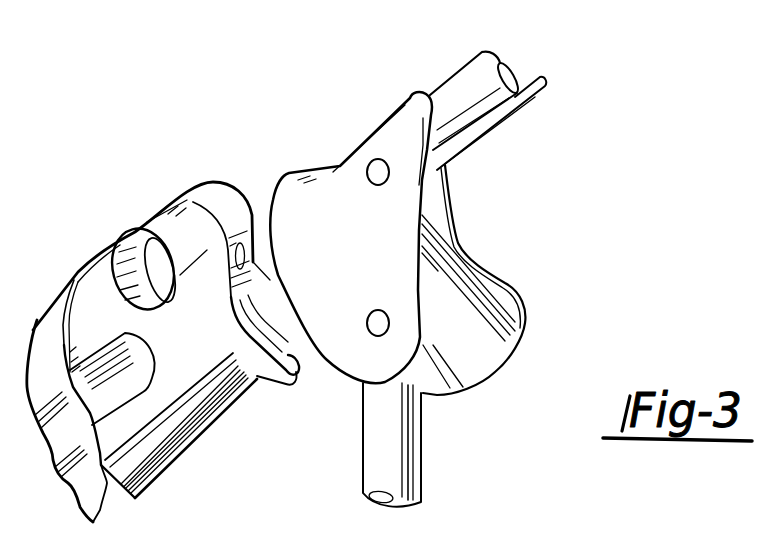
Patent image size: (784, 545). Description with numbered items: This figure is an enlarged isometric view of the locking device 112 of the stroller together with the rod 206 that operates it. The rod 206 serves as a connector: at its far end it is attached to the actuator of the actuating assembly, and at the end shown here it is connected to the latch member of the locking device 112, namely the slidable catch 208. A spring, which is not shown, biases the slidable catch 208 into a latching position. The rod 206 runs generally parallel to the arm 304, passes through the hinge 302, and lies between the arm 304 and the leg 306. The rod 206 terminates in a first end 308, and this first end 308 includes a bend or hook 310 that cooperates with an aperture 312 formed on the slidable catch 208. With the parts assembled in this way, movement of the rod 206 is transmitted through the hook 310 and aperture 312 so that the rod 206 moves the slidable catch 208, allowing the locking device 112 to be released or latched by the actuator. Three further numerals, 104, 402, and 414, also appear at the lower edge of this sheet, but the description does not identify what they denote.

The locking device 112 is at (142, 210).
The slidable catch 208 is at (147, 432).
The first end 308 is at (230, 425).
The bend or hook 310 is at (243, 350).
The aperture 312 is at (291, 358).
The hinge 302 is at (503, 303).
The arm 304 is at (460, 92).
The leg 306 is at (408, 468).
The rod 206 is at (510, 117).
The frame 104 is at (532, 544).
The member 402 is at (664, 544).
The member 414 is at (696, 544).